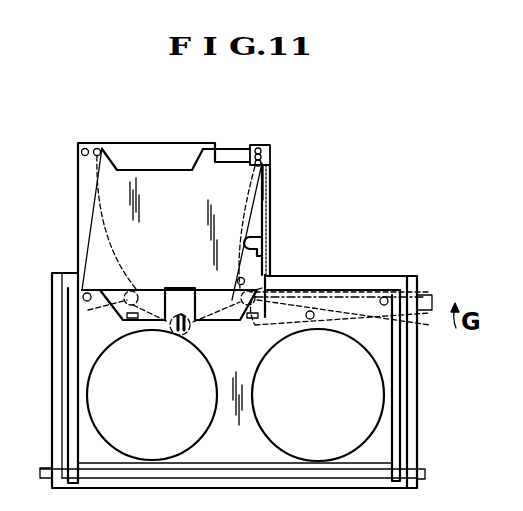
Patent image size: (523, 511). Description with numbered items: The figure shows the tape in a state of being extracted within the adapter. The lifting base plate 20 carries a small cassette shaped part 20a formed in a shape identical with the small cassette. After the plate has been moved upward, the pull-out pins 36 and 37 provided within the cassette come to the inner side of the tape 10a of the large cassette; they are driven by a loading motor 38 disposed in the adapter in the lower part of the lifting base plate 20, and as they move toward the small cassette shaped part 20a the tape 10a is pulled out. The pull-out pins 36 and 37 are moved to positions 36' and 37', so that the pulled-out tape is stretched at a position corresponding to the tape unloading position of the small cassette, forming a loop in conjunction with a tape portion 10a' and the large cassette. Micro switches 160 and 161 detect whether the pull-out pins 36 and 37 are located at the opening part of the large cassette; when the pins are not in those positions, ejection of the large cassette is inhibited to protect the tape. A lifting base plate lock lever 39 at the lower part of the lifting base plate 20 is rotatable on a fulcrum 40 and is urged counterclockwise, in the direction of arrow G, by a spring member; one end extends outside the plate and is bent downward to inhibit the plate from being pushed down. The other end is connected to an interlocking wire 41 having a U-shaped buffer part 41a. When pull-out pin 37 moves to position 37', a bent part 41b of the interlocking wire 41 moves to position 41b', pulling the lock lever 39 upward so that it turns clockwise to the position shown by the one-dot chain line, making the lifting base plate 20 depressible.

The lifting base plate 20 is at (386, 228).
The small cassette shaped part 20a is at (117, 192).
The tape 10a is at (169, 281).
The tape portion 10a' is at (152, 137).
The pull-out pin 36 is at (90, 313).
The position of pull-out pin 36' is at (98, 127).
The pull-out pin 37 is at (274, 283).
The position of pull-out pin 37' is at (289, 154).
The loading motor 38 is at (174, 336).
The lifting base plate lock lever 39 is at (432, 312).
The fulcrum 40 is at (310, 311).
The interlocking wire 41 is at (270, 203).
The U-shaped buffer part 41a is at (267, 225).
The bent part 41b is at (298, 183).
The position of bent part 41b' is at (273, 131).
The micro switch 160 is at (123, 320).
The micro switch 161 is at (229, 322).